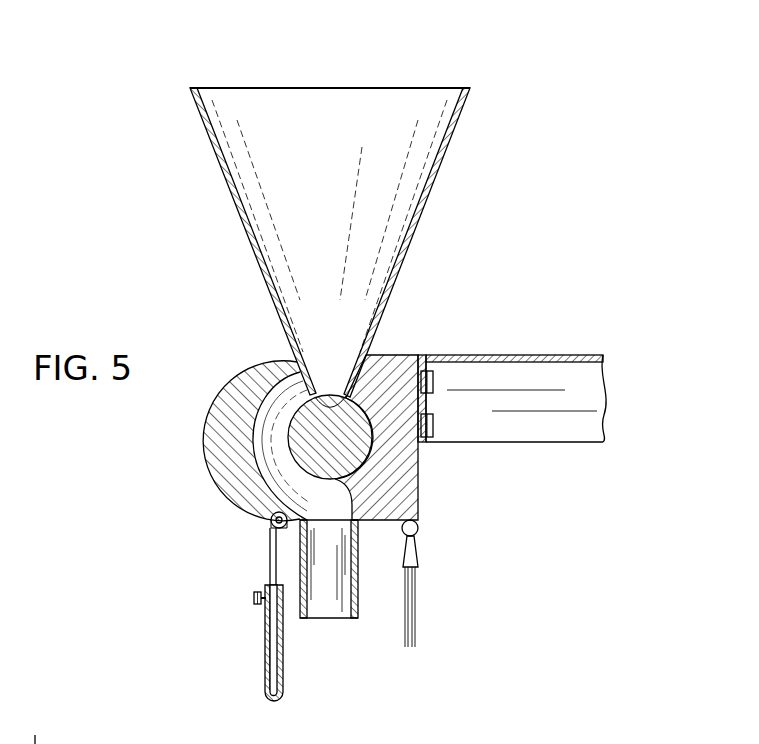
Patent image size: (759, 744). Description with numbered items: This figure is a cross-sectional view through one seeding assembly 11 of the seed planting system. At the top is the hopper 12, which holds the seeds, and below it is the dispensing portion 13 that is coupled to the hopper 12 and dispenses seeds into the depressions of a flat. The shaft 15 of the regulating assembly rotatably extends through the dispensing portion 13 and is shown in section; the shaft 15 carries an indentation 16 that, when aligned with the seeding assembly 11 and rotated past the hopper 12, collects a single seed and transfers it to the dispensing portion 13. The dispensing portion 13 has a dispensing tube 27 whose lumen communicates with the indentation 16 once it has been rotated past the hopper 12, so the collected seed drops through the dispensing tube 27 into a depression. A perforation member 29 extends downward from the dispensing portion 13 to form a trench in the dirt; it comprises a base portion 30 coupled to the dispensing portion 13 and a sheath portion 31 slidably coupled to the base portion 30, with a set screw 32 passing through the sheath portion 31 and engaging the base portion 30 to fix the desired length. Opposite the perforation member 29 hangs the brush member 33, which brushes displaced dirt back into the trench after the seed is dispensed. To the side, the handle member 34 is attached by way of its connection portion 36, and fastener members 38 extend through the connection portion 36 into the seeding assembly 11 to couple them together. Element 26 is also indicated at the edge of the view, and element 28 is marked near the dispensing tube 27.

The seeding assembly 11 is at (497, 76).
The hopper 12 is at (368, 110).
The dispensing portion 13 is at (400, 490).
The shaft 15 is at (325, 445).
The indentation 16 is at (300, 440).
The support 26 is at (32, 725).
The dispensing tube 27 is at (360, 618).
The outlet bore 28 is at (330, 617).
The perforation member 29 is at (270, 543).
The base portion 30 is at (271, 563).
The sheath portion 31 is at (270, 699).
The set screw 32 is at (256, 600).
The brush member 33 is at (414, 598).
The handle member 34 is at (518, 357).
The connection portion 36 is at (580, 395).
The fastener member 38 is at (431, 376).